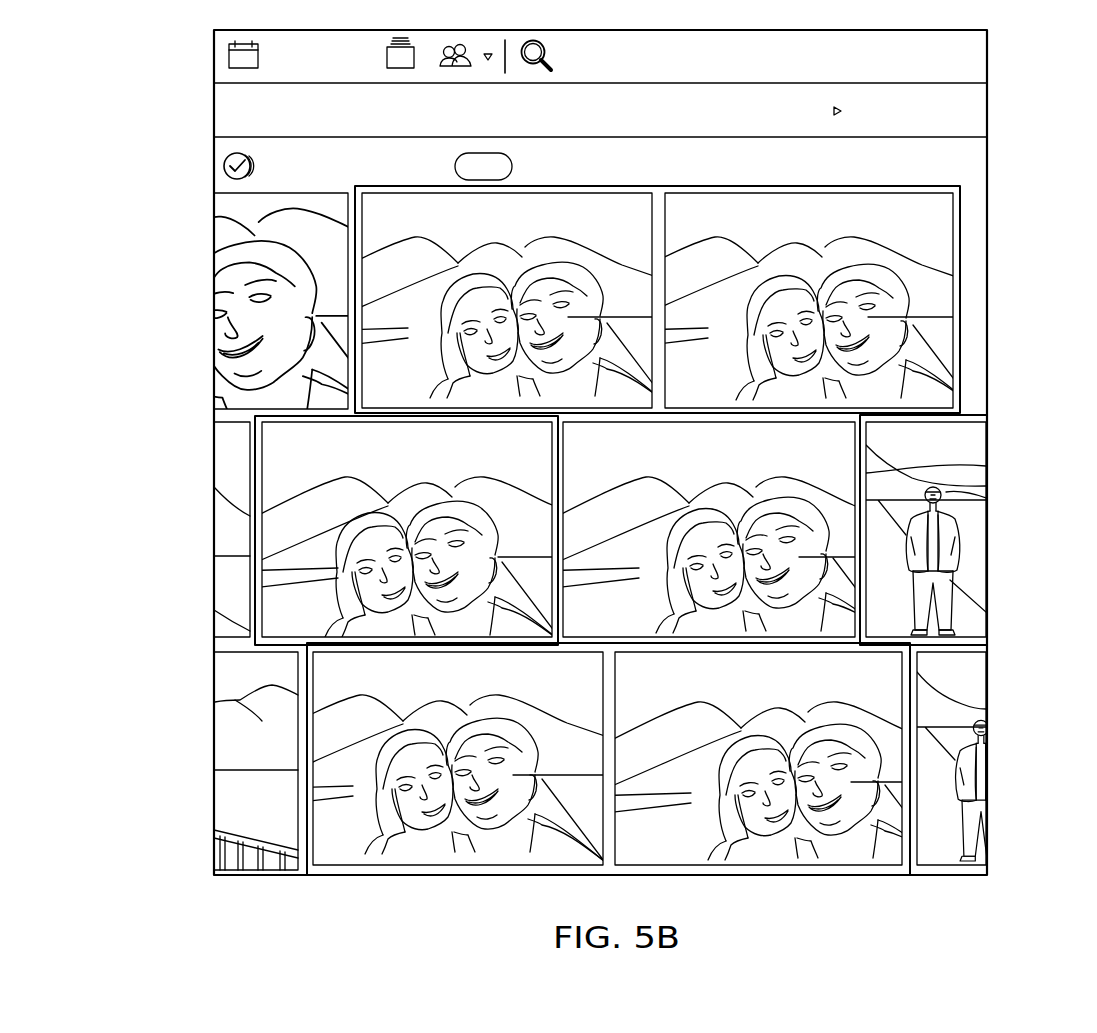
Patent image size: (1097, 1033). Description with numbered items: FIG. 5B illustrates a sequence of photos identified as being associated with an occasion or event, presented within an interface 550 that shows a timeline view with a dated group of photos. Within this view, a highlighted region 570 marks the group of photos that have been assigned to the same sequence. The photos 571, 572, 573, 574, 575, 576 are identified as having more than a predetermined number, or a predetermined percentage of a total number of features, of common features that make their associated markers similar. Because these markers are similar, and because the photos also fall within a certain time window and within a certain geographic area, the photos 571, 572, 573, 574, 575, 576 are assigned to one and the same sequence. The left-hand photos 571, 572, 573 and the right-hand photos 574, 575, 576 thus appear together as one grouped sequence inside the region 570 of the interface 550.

The user interface 550 is at (948, 58).
The selected group of photos 570 is at (926, 188).
The photo 571 is at (350, 229).
The photo 572 is at (322, 466).
The photo 573 is at (386, 672).
The photo 574 is at (912, 222).
The photo 575 is at (866, 472).
The photo 576 is at (903, 690).